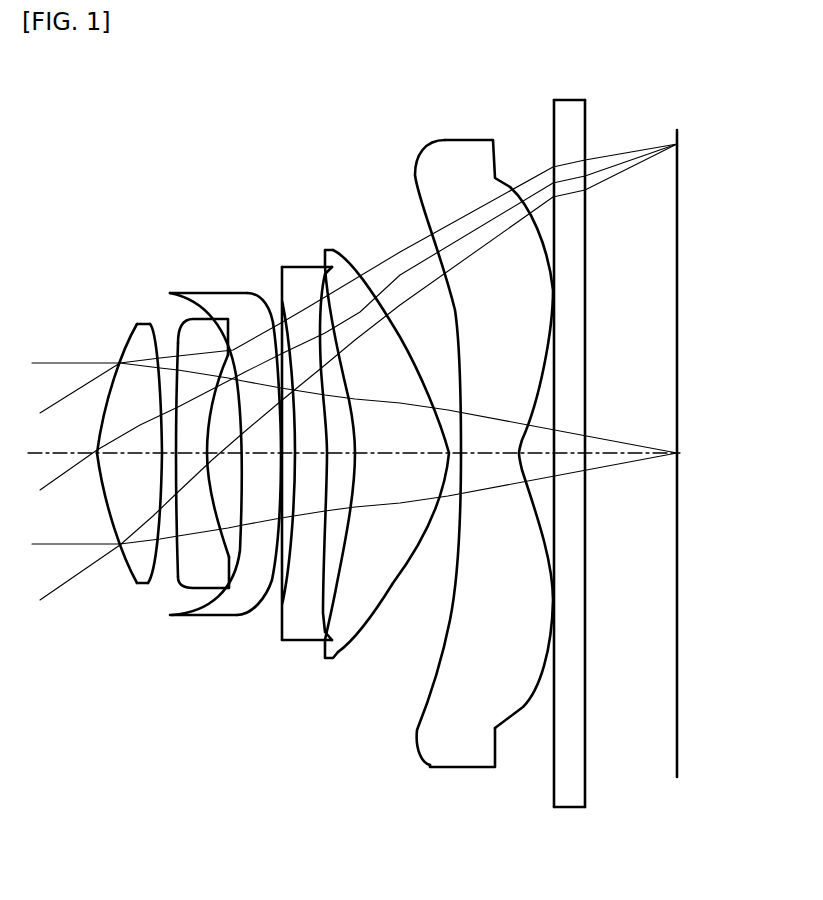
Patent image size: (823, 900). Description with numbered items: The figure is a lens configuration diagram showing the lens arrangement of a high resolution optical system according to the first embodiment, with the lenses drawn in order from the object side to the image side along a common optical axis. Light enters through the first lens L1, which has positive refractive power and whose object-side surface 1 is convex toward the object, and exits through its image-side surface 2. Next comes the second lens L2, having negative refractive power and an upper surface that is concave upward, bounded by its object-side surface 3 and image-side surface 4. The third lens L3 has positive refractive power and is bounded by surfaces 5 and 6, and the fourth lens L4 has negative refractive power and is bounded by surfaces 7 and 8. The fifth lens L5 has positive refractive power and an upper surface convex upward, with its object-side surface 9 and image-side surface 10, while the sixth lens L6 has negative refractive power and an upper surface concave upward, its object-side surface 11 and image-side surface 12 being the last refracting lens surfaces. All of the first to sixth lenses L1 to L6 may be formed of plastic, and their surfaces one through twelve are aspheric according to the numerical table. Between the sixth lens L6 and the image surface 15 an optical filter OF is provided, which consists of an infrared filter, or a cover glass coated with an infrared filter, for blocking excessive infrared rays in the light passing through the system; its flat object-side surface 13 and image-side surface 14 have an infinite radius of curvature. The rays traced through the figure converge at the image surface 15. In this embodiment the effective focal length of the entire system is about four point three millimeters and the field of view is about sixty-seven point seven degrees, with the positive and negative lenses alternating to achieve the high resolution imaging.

The object-side surface of first lens 1 is at (92, 437).
The image-side surface of first lens 2 is at (157, 332).
The object-side surface of second lens 3 is at (158, 566).
The image-side surface of second lens 4 is at (226, 357).
The object-side surface of third lens 5 is at (205, 593).
The image-side surface of third lens 6 is at (272, 328).
The object-side surface of fourth lens 7 is at (282, 604).
The image-side surface of fourth lens 8 is at (317, 308).
The object-side surface of fifth lens 9 is at (333, 550).
The image-side surface of fifth lens 10 is at (376, 295).
The object-side surface of sixth lens 11 is at (425, 683).
The image-side surface of sixth lens 12 is at (522, 197).
The object-side surface of optical filter 13 is at (552, 763).
The image-side surface of optical filter 14 is at (587, 780).
The image surface 15 is at (680, 652).
The first lens L1 is at (93, 449).
The second lens L2 is at (169, 471).
The third lens L3 is at (225, 476).
The fourth lens L4 is at (283, 474).
The fifth lens L5 is at (385, 464).
The sixth lens L6 is at (447, 466).
The optical filter OF is at (579, 490).